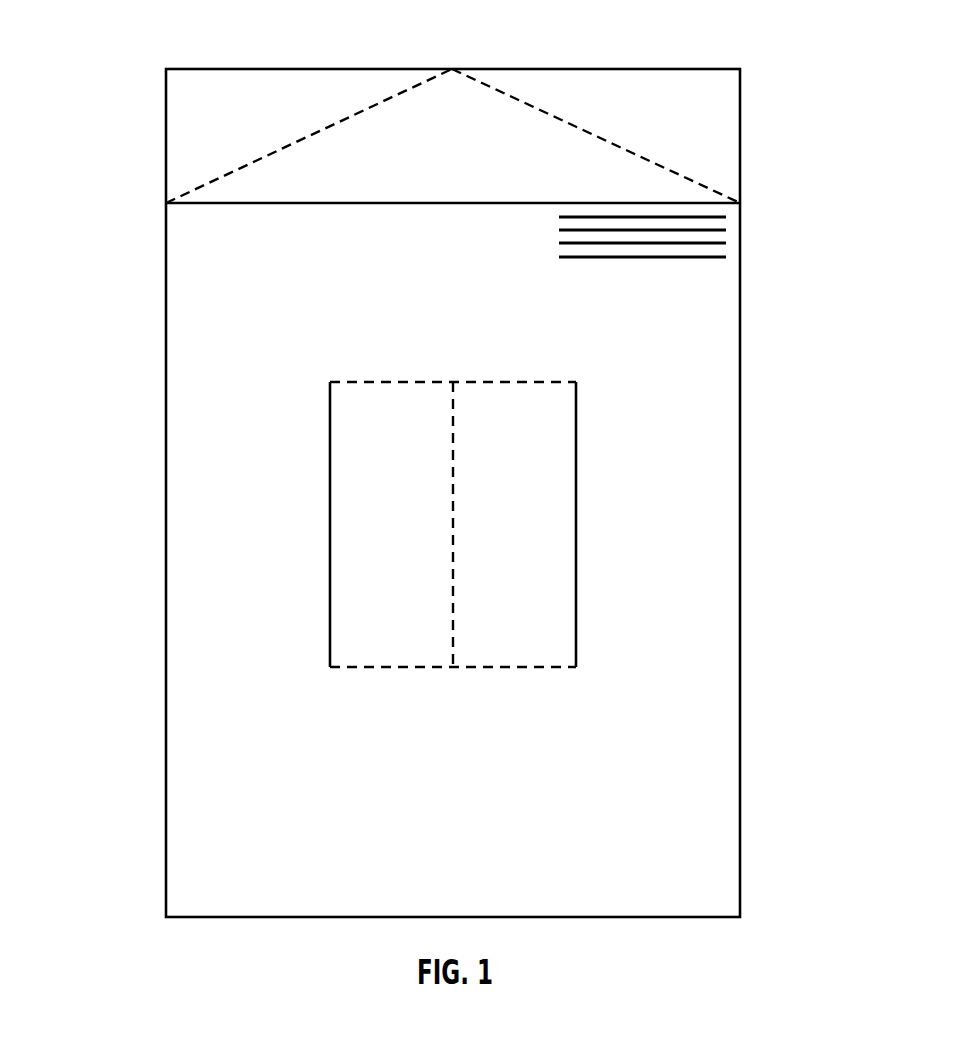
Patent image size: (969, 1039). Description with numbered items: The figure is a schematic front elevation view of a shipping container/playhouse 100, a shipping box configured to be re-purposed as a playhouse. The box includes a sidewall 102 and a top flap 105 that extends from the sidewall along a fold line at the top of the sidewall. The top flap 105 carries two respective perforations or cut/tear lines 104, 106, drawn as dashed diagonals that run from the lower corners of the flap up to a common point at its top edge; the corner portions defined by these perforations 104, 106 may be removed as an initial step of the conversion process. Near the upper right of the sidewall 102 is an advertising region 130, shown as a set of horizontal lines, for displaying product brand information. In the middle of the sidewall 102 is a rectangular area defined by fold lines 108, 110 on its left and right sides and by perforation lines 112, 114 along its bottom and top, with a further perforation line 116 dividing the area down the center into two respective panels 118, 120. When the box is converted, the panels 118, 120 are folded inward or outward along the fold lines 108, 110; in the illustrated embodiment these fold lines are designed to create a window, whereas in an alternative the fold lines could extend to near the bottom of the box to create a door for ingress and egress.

The shipping container/playhouse 100 is at (110, 44).
The sidewall 102 is at (166, 812).
The perforation or cut/tear line 104 is at (297, 141).
The top flap 105 is at (741, 101).
The perforation or cut/tear line 106 is at (604, 140).
The advertising region 130 is at (744, 216).
The fold line 108 is at (330, 452).
The fold line 110 is at (577, 447).
The perforation line 112 is at (520, 669).
The perforation line 114 is at (367, 380).
The perforation line 116 is at (455, 432).
The panel 118 is at (413, 543).
The second panel 120 is at (543, 543).